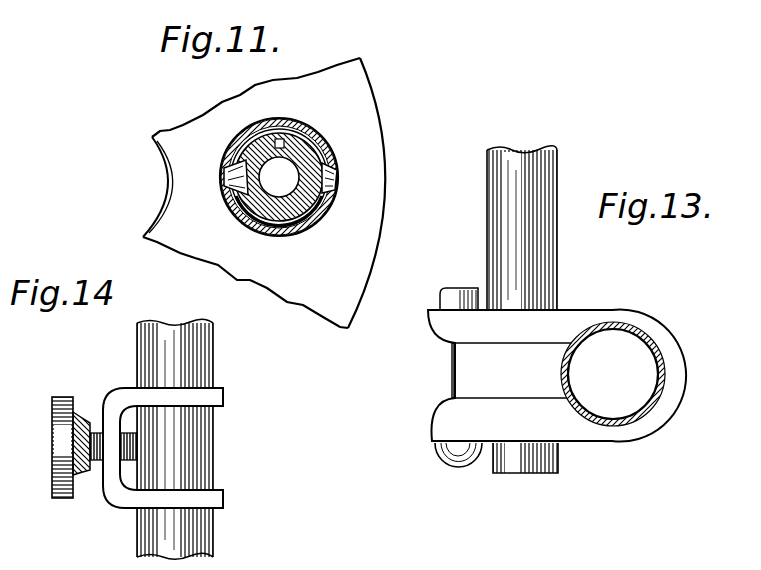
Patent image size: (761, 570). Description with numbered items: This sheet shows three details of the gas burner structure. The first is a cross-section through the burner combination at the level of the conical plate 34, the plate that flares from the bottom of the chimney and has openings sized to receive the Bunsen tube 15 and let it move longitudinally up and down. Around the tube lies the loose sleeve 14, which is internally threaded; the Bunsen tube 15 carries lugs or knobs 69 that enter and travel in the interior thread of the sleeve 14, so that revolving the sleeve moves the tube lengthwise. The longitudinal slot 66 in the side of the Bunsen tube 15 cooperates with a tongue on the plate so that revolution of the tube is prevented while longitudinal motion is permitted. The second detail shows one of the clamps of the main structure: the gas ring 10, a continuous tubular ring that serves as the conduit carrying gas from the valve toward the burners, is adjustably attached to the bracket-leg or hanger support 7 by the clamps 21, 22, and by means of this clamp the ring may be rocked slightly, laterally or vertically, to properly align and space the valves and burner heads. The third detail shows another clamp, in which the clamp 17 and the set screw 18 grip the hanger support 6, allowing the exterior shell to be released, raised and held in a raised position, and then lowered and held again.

In FIG. 11, the conical plate 34 is at (371, 84).
In FIG. 11, the loose sleeve 14 is at (320, 219).
In FIG. 11, the longitudinal slot 66 is at (293, 124).
In FIG. 11, the Bunsen tube 15 is at (315, 146).
In FIG. 11, the lugs or knobs 69 is at (232, 186).
In FIG. 13, the hanger support 7 is at (558, 259).
In FIG. 13, the clamp 22 is at (452, 377).
In FIG. 13, the clamp 21 is at (576, 313).
In FIG. 13, the gas ring 10 is at (660, 353).
In FIG. 14, the hanger support 6 is at (214, 442).
In FIG. 14, the clamp 17 is at (224, 396).
In FIG. 14, the set screw 18 is at (62, 397).